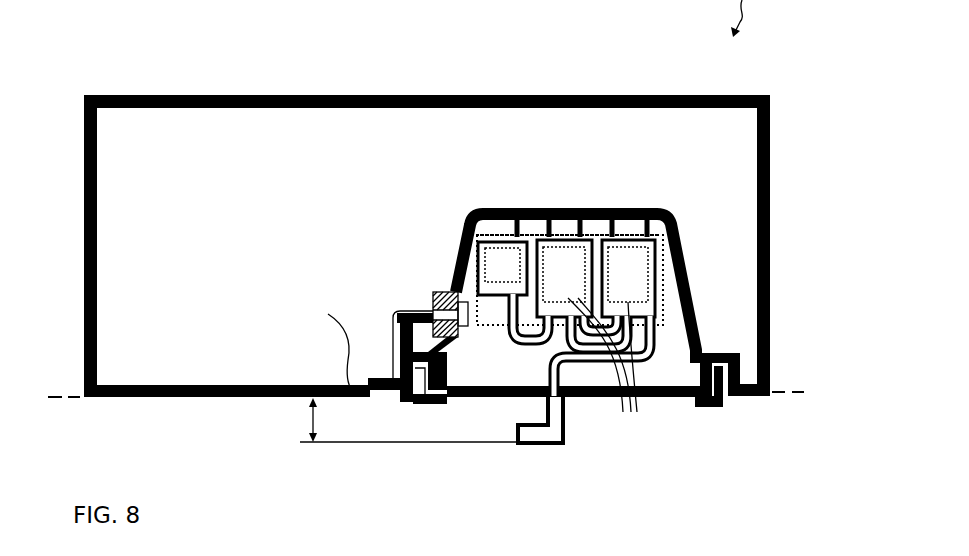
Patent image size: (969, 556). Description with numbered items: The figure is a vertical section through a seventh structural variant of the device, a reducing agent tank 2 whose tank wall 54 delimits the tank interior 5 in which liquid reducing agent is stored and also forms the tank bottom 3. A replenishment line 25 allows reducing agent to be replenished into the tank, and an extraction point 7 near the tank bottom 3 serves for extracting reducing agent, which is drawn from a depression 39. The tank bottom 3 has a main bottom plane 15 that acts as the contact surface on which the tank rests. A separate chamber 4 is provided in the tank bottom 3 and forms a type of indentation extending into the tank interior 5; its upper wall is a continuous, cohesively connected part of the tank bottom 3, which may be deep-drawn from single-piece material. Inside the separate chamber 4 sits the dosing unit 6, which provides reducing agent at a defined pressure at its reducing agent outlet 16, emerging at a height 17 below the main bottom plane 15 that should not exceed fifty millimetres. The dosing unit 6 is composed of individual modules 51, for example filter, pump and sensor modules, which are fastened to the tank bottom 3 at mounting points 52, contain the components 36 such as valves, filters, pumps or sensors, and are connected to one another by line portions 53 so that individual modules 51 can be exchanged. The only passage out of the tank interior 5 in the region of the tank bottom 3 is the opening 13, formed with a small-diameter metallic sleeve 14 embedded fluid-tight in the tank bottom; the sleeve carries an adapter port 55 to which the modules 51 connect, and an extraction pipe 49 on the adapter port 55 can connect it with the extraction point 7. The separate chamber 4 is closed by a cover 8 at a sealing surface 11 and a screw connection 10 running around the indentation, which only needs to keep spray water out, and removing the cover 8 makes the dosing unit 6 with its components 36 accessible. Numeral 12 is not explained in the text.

The reducing agent tank 2 is at (771, 130).
The tank bottom 3 is at (740, 395).
The separate chamber 4 is at (667, 212).
The tank interior 5 is at (283, 138).
The dosing unit 6 is at (500, 283).
The extraction point 7 is at (329, 338).
The cover 8 is at (668, 394).
The screw connection 10 is at (380, 395).
The sealing surface 11 is at (442, 378).
The side wall 12 is at (85, 243).
The opening 13 is at (402, 315).
The metallic sleeve 14 is at (415, 310).
The main bottom plane 15 is at (68, 397).
The reducing agent outlet 16 is at (567, 433).
The height 17 is at (308, 421).
The replenishment line 25 is at (210, 22).
The components 36 is at (606, 370).
The depression 39 is at (326, 398).
The extraction pipe 49 is at (403, 315).
The modules 51 is at (468, 214).
The mounting points 52 is at (492, 232).
The line portions 53 is at (533, 347).
The tank wall 54 is at (768, 187).
The adapter port 55 is at (466, 328).